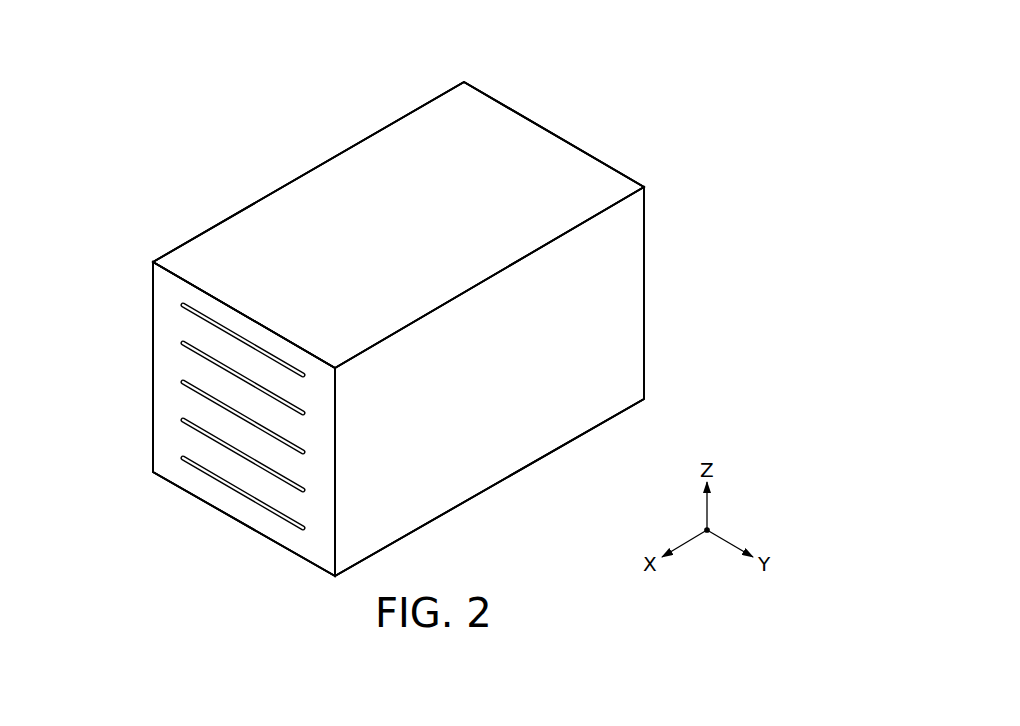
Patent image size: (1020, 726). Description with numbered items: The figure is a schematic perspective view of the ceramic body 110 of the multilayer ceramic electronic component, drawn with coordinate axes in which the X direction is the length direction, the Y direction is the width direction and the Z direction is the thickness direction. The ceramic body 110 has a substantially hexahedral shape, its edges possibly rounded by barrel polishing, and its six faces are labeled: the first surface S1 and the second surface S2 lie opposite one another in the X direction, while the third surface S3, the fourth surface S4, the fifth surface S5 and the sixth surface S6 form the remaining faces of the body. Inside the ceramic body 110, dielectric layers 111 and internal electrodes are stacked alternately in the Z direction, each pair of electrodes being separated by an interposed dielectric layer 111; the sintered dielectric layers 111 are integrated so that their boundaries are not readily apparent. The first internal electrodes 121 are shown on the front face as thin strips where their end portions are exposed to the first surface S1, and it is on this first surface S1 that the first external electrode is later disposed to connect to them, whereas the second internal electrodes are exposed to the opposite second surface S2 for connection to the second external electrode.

The ceramic body 110 is at (238, 32).
The dielectric layer 111 is at (162, 387).
The first internal electrode 121 is at (188, 360).
The first surface S1 is at (230, 464).
The second surface S2 is at (553, 164).
The third surface S3 is at (573, 392).
The fourth surface S4 is at (262, 230).
The fifth surface S5 is at (432, 143).
The sixth surface S6 is at (460, 474).